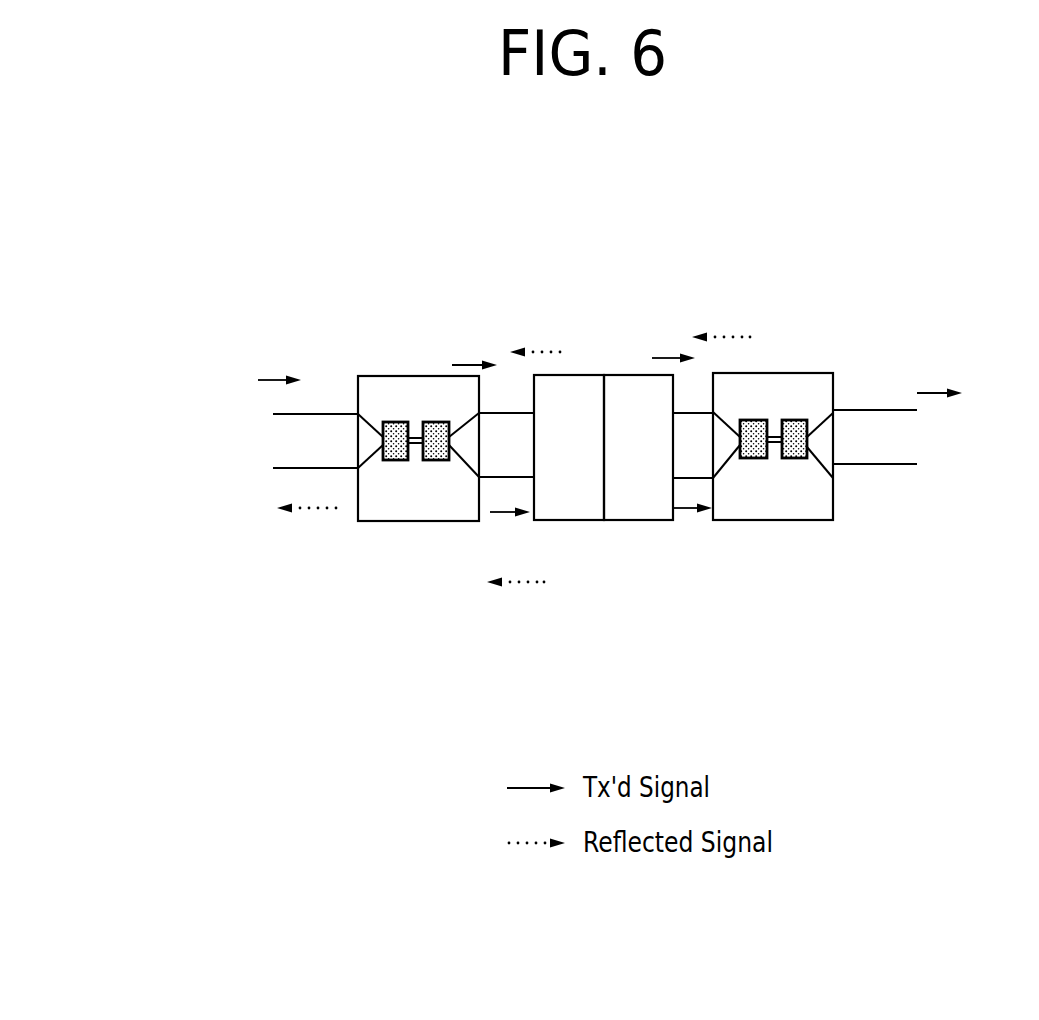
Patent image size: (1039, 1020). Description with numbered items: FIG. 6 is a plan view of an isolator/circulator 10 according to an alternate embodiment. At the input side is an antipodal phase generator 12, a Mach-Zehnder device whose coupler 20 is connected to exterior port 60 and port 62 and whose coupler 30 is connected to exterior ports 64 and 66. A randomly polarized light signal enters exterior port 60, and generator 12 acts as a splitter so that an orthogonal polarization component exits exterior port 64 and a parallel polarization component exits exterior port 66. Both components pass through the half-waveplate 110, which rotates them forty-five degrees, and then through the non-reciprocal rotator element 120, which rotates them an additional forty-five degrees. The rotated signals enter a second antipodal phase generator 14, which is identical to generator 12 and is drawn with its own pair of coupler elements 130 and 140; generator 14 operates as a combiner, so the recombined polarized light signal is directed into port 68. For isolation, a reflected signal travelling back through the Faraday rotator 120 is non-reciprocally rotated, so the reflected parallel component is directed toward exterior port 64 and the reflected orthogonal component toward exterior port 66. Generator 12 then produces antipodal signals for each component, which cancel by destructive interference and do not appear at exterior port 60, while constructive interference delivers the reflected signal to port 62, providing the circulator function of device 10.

The isolator/circulator 10 is at (788, 207).
The antipodal phase generator 12 is at (390, 383).
The second antipodal phase generator 14 is at (787, 383).
The coupler 20 is at (392, 462).
The coupler 30 is at (438, 462).
The exterior port 60 is at (297, 415).
The port 62 is at (297, 470).
The exterior port 64 is at (506, 395).
The exterior port 66 is at (506, 461).
The port 68 is at (875, 390).
The half-waveplate 110 is at (570, 507).
The non-reciprocal rotator element 120 is at (620, 503).
The third birefringent element 130 is at (748, 463).
The fourth birefringent element 140 is at (793, 460).